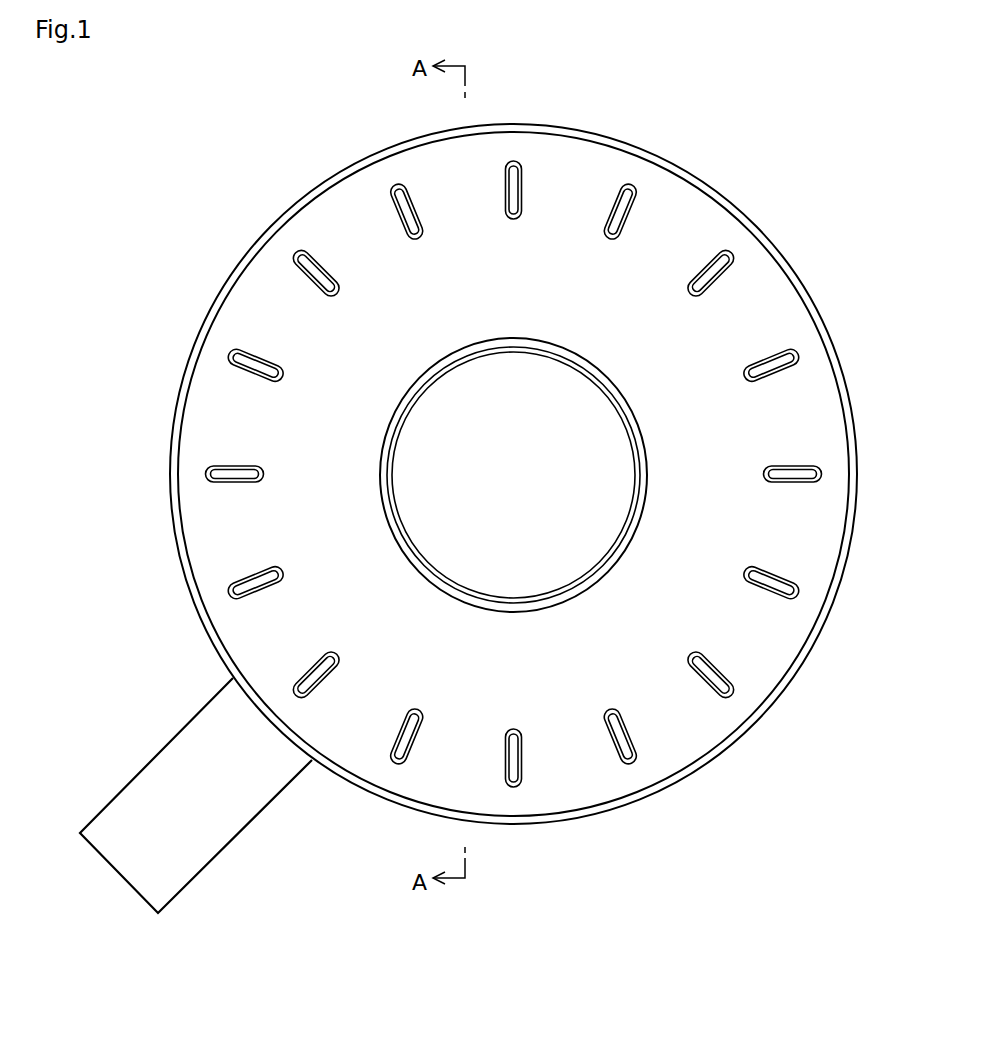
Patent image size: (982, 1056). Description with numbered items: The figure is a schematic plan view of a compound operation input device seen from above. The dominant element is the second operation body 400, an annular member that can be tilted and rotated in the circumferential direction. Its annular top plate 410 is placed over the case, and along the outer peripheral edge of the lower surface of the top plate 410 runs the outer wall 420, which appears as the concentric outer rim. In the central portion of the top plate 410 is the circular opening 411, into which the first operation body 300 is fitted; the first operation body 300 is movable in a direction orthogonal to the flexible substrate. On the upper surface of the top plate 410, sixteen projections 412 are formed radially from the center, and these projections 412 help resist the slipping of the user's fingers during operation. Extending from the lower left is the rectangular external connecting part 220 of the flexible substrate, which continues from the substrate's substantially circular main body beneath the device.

The external connecting part 220 is at (195, 833).
The first operation body 300 is at (590, 502).
The second operation body 400 is at (765, 106).
The top plate 410 is at (665, 228).
The opening 411 is at (632, 438).
The projections 412 is at (322, 263).
The outer wall 420 is at (727, 198).